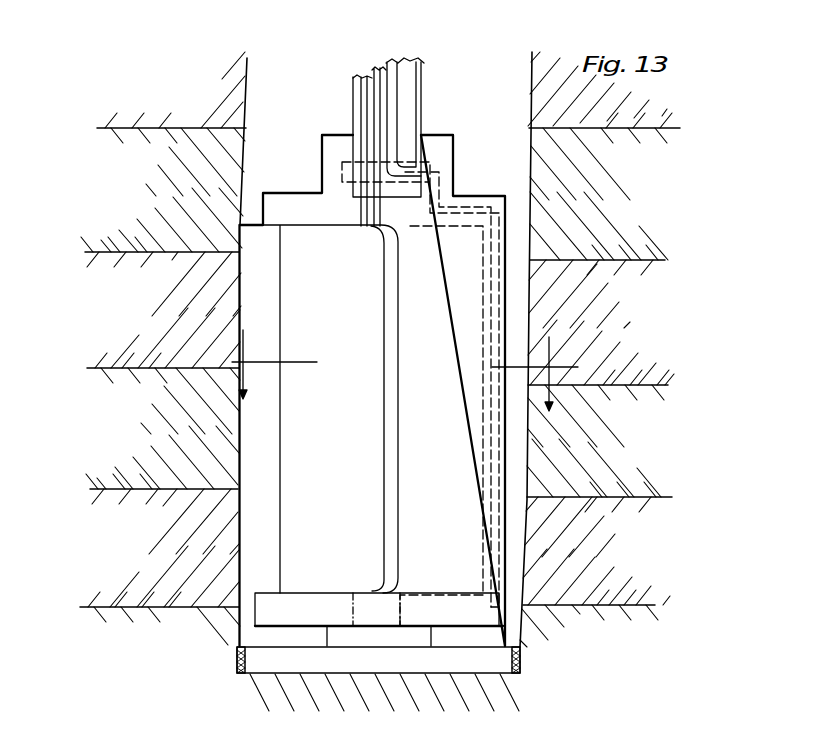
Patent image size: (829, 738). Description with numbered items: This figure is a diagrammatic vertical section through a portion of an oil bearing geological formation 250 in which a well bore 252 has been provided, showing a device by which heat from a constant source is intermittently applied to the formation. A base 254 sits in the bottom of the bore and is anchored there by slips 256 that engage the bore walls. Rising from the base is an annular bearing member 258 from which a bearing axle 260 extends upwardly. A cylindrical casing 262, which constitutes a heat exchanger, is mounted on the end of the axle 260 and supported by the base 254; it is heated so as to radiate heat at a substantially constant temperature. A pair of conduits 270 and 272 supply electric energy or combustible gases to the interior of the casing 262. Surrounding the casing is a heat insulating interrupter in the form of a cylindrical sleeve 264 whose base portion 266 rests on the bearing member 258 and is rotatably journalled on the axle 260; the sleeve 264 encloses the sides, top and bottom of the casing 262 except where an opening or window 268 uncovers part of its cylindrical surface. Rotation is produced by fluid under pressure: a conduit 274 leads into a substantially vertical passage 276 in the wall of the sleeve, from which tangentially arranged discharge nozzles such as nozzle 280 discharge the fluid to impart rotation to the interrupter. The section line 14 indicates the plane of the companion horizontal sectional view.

The section line 14- 14 is at (408, 360).
The geological formation 250 is at (160, 140).
The well bore 252 is at (530, 187).
The base 254 is at (455, 662).
The slips 256 is at (520, 663).
The annular bearing member 258 is at (353, 633).
The bearing axle 260 is at (400, 612).
The cylindrical casing 262 is at (292, 410).
The sleeve 264 is at (408, 428).
The base portion 266 is at (308, 605).
The opening or window 268 is at (393, 298).
The conduit 270 is at (365, 98).
The conduit 272 is at (378, 77).
The conduit 274 is at (393, 118).
The vertical passage 276 is at (493, 233).
The discharge nozzle 280 is at (488, 387).